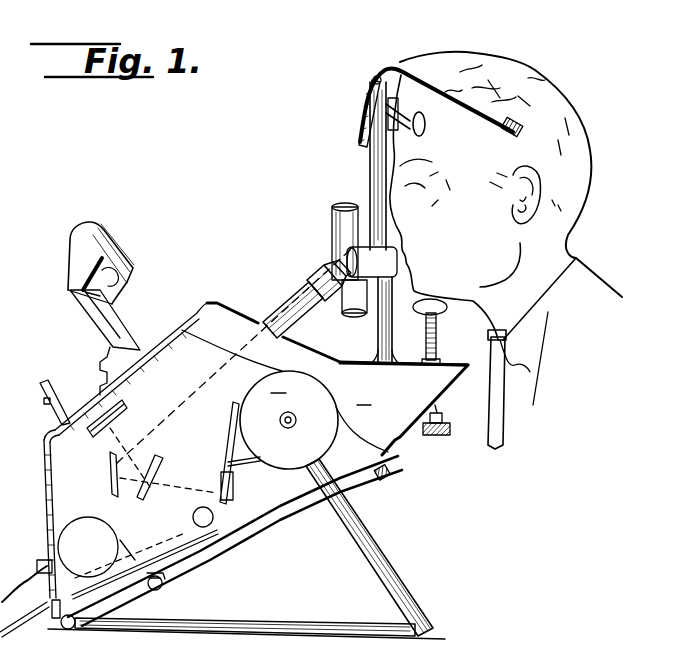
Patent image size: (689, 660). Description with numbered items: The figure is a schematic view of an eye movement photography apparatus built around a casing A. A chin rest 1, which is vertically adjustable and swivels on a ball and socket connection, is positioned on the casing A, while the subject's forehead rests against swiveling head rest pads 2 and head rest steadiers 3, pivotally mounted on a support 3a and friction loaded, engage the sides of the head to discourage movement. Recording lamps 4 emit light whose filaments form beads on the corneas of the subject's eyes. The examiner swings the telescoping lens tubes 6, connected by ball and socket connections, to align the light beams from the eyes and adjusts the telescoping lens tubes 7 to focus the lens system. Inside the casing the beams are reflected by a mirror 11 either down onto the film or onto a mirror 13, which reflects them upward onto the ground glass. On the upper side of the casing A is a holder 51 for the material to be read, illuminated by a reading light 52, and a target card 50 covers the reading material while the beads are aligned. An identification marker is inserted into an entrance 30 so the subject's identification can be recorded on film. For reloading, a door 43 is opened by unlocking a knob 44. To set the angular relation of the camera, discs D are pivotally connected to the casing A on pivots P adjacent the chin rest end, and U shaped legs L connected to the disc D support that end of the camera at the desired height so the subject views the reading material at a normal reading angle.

The chin rest 1 is at (440, 335).
The head rest pads 2 is at (423, 112).
The head rest steadiers 3 is at (478, 107).
The support 3a is at (372, 82).
The recording lamps 4 is at (343, 217).
The telescoping lens tubes 6 is at (282, 302).
The telescoping lens tubes 7 is at (316, 275).
The mirror 11 is at (106, 475).
The mirror 13 is at (143, 493).
The entrance 30 is at (55, 602).
The door 43 is at (390, 463).
The knob 44 is at (388, 478).
The target card 50 is at (197, 298).
The holder 51 is at (117, 330).
The reading light 52 is at (103, 237).
The casing A is at (404, 409).
The discs D is at (289, 420).
The pivots P is at (288, 428).
The U shaped legs L is at (373, 533).